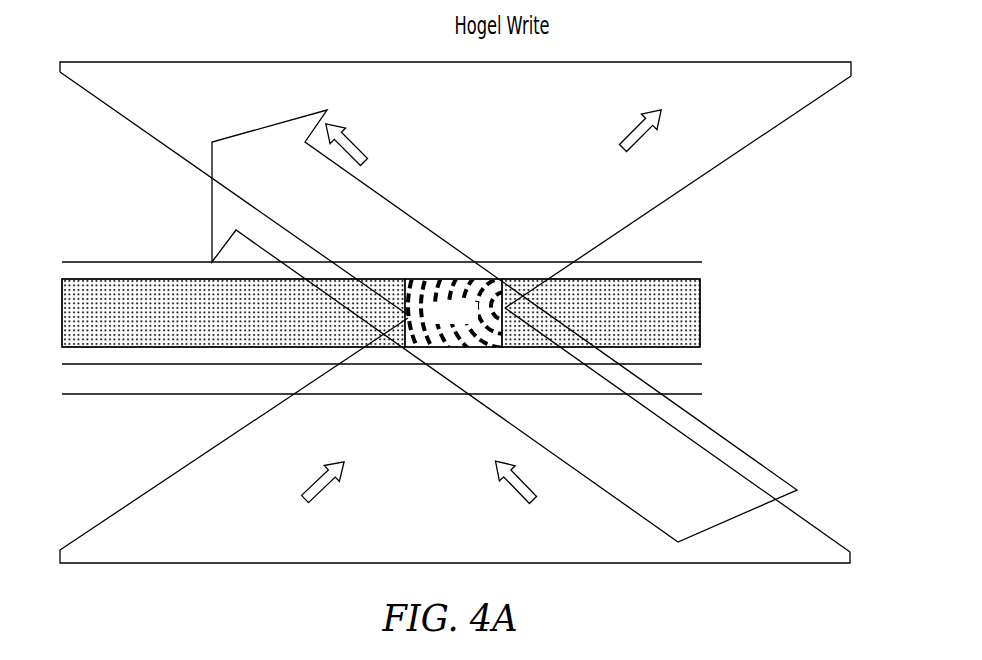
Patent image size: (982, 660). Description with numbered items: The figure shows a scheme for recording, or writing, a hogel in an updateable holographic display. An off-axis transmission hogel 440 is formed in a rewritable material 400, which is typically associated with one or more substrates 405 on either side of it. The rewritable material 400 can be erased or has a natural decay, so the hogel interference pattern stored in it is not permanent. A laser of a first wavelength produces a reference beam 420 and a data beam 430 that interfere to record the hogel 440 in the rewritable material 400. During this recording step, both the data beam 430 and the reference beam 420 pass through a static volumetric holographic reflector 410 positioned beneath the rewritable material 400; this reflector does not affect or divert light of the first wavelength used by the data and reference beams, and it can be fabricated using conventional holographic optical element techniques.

The rewritable material 400 is at (700, 313).
The substrate 405 is at (700, 265).
The static volumetric holographic reflector 410 is at (87, 394).
The reference beam 420 is at (760, 461).
The data beam 430 is at (96, 521).
The hogel 440 is at (508, 300).